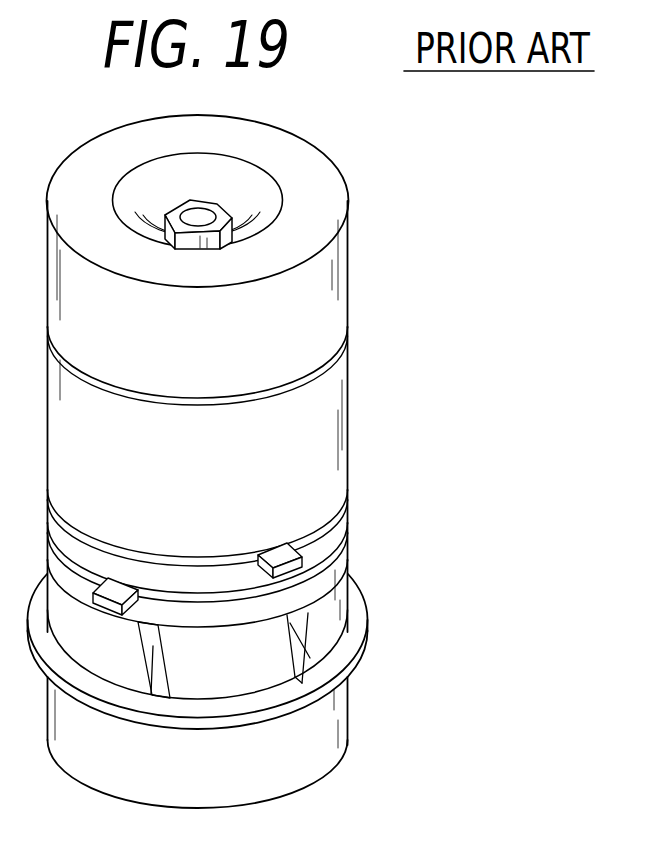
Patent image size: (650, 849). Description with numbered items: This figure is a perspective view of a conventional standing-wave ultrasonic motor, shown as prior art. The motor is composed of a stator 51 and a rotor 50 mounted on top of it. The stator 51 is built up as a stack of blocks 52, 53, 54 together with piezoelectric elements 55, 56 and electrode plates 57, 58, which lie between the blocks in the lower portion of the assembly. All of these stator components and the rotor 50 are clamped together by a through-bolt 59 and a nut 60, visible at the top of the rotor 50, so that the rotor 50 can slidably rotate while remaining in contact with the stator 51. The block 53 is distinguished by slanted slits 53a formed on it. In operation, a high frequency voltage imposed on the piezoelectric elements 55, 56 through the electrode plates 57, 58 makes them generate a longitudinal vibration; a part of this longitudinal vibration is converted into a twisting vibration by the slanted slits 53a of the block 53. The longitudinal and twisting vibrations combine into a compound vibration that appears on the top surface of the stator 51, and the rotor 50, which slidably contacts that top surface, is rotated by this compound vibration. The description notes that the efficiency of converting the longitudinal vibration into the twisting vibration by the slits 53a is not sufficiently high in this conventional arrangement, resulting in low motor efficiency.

The rotor 50 is at (328, 292).
The stator 51 is at (243, 567).
The block 52 is at (335, 410).
The block 53 is at (340, 598).
The slanted slits 53a is at (286, 628).
The block 54 is at (210, 691).
The piezoelectric element 55 is at (343, 520).
The piezoelectric element 56 is at (343, 553).
The electrode plate 57 is at (343, 500).
The electrode plate 58 is at (345, 535).
The through-bolt 59 is at (200, 214).
The nut 60 is at (177, 212).